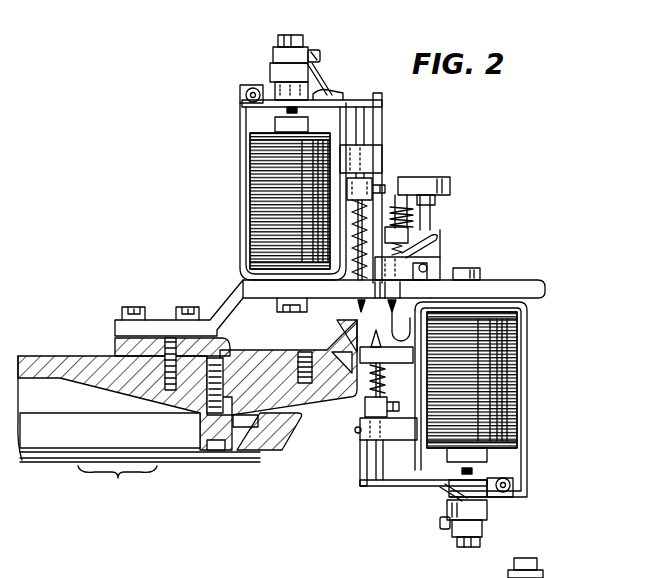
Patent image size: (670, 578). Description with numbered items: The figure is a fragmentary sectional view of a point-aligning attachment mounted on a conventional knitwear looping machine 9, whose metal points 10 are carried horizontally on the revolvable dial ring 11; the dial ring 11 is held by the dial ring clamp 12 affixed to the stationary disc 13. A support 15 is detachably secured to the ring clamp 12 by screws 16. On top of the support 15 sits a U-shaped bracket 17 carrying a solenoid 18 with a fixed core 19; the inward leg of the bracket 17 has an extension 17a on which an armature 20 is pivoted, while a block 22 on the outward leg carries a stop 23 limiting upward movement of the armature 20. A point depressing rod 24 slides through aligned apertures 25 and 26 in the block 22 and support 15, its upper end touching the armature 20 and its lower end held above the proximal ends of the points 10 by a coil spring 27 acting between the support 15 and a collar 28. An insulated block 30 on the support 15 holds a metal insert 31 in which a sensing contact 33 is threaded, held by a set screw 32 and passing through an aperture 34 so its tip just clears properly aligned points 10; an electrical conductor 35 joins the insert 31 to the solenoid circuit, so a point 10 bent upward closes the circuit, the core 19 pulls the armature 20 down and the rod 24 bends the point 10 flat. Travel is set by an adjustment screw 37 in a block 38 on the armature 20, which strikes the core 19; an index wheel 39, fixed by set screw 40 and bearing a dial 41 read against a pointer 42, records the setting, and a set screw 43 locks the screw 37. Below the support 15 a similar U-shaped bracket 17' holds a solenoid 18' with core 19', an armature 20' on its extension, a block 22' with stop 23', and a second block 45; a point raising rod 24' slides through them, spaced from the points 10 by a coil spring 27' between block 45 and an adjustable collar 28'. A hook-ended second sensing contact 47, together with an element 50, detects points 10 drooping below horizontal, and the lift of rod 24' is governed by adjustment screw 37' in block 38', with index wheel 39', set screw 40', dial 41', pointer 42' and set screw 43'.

The knitwear looping machine 9 is at (117, 484).
The points 10 is at (362, 318).
The dial ring 11 is at (262, 368).
The dial ring clamp 12 is at (130, 348).
The stationary disc 13 is at (40, 362).
The support 15 is at (228, 302).
The screws 16 is at (192, 307).
The U-shaped bracket 17 is at (268, 191).
The extension 17a is at (262, 100).
The solenoid 18 is at (262, 201).
The fixed core 19 is at (315, 119).
The armature 20 is at (320, 168).
The block 22 is at (398, 150).
The stop 23 is at (410, 85).
The point depressing rod 24 is at (406, 138).
The aperture 25 is at (372, 168).
The aperture 26 is at (372, 290).
The coil spring 27 is at (410, 176).
The collar 28 is at (464, 160).
The insulated block 30 is at (430, 246).
The metal insert 31 is at (440, 274).
The set screw 32 is at (440, 262).
The sensing contact 33 is at (433, 232).
The aperture 34 is at (430, 286).
The electrical conductor 35 is at (443, 252).
The adjustment screw 37 is at (415, 293).
The block 38 is at (331, 76).
The index wheel 39 is at (400, 305).
The set screw 40 is at (408, 295).
The dial 41 is at (269, 74).
The pointer 42 is at (369, 62).
The set screw 43 is at (227, 84).
The second block 45 is at (386, 357).
The second sensing contact 47 is at (445, 195).
The plate 50 is at (447, 180).
The U-shaped bracket 17' is at (498, 399).
The solenoid 18' is at (504, 380).
The fixed core 19' is at (452, 463).
The armature 20' is at (423, 477).
The block 22' is at (386, 431).
The stop 23' is at (339, 464).
The point raising rod 24' is at (401, 460).
The coil spring 27' is at (399, 379).
The adjustable collar 28' is at (359, 410).
The adjustment screw 37' is at (449, 554).
The block 38' is at (481, 474).
The index wheel 39' is at (494, 531).
The set screw 40' is at (422, 538).
The dial 41' is at (437, 519).
The pointer 42' is at (421, 503).
The set screw 43' is at (517, 501).